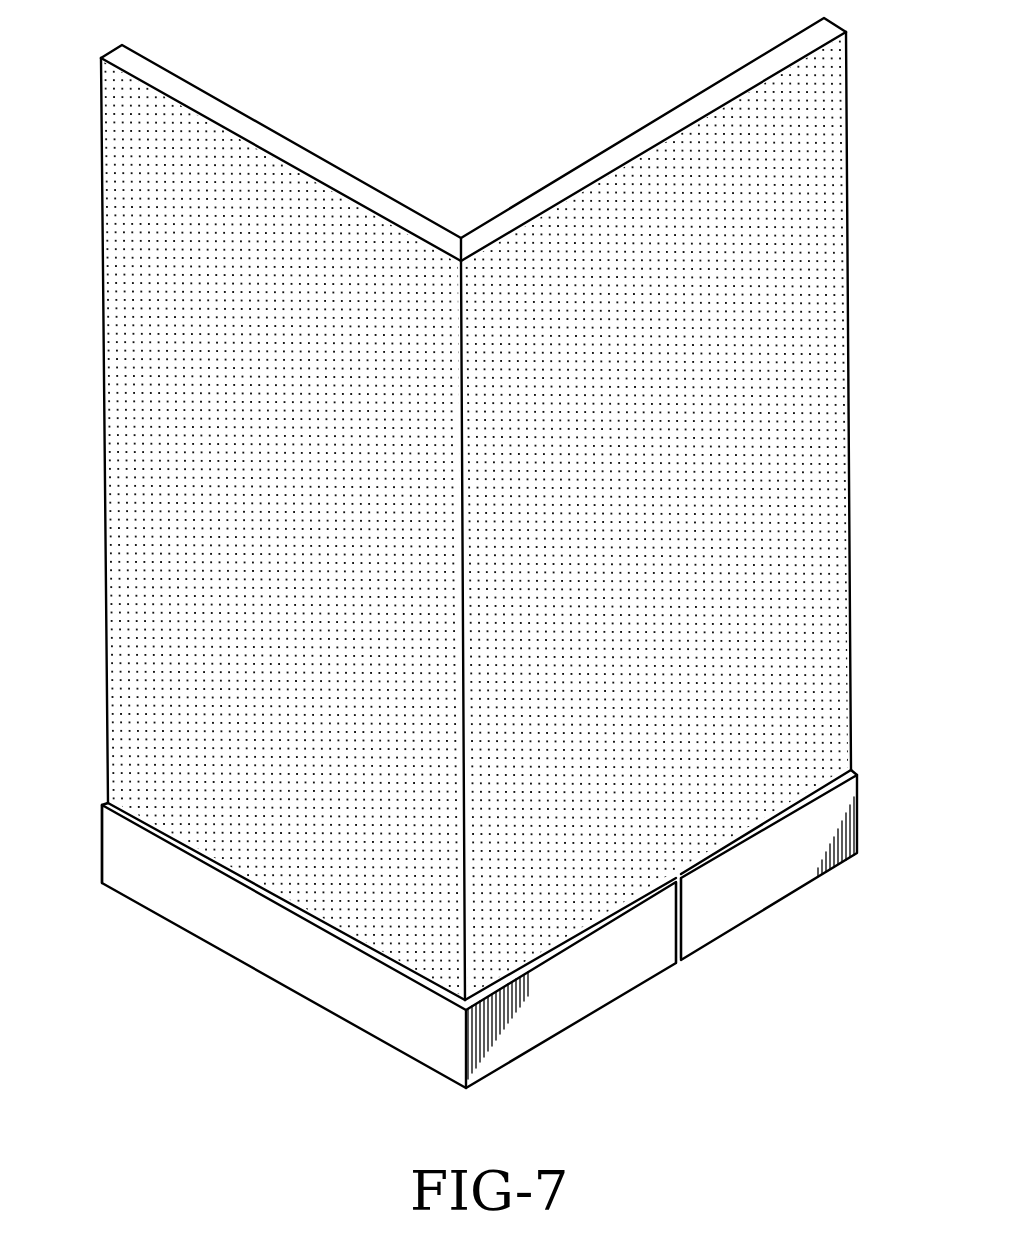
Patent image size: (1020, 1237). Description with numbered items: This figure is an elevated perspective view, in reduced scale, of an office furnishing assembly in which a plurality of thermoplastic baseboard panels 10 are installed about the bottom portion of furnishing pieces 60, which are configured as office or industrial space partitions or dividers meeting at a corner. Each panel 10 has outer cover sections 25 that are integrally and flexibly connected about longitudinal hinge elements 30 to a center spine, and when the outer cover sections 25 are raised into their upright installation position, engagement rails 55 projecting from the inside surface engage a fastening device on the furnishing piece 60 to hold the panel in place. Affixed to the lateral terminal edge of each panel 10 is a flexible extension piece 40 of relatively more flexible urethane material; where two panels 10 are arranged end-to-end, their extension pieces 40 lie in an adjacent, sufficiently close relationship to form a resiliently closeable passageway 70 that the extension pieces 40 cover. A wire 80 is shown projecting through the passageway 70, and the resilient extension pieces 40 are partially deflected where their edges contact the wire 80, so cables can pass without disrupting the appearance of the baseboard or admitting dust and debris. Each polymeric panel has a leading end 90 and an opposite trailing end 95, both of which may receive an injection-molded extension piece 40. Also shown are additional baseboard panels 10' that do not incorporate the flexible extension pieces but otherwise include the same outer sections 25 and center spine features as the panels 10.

The baseboard panel 10 is at (524, 946).
The baseboard panel without extension pieces 10' is at (70, 844).
The outer cover section 25 is at (100, 858).
The longitudinal hinge element 30 is at (310, 1000).
The flexible extension piece 40 is at (675, 920).
The engagement rail 55 is at (856, 770).
The furnishing piece 60 is at (301, 143).
The passageway 70 is at (669, 944).
The wire 80 is at (678, 963).
The leading end 90 is at (679, 874).
The trailing end 95 is at (859, 800).